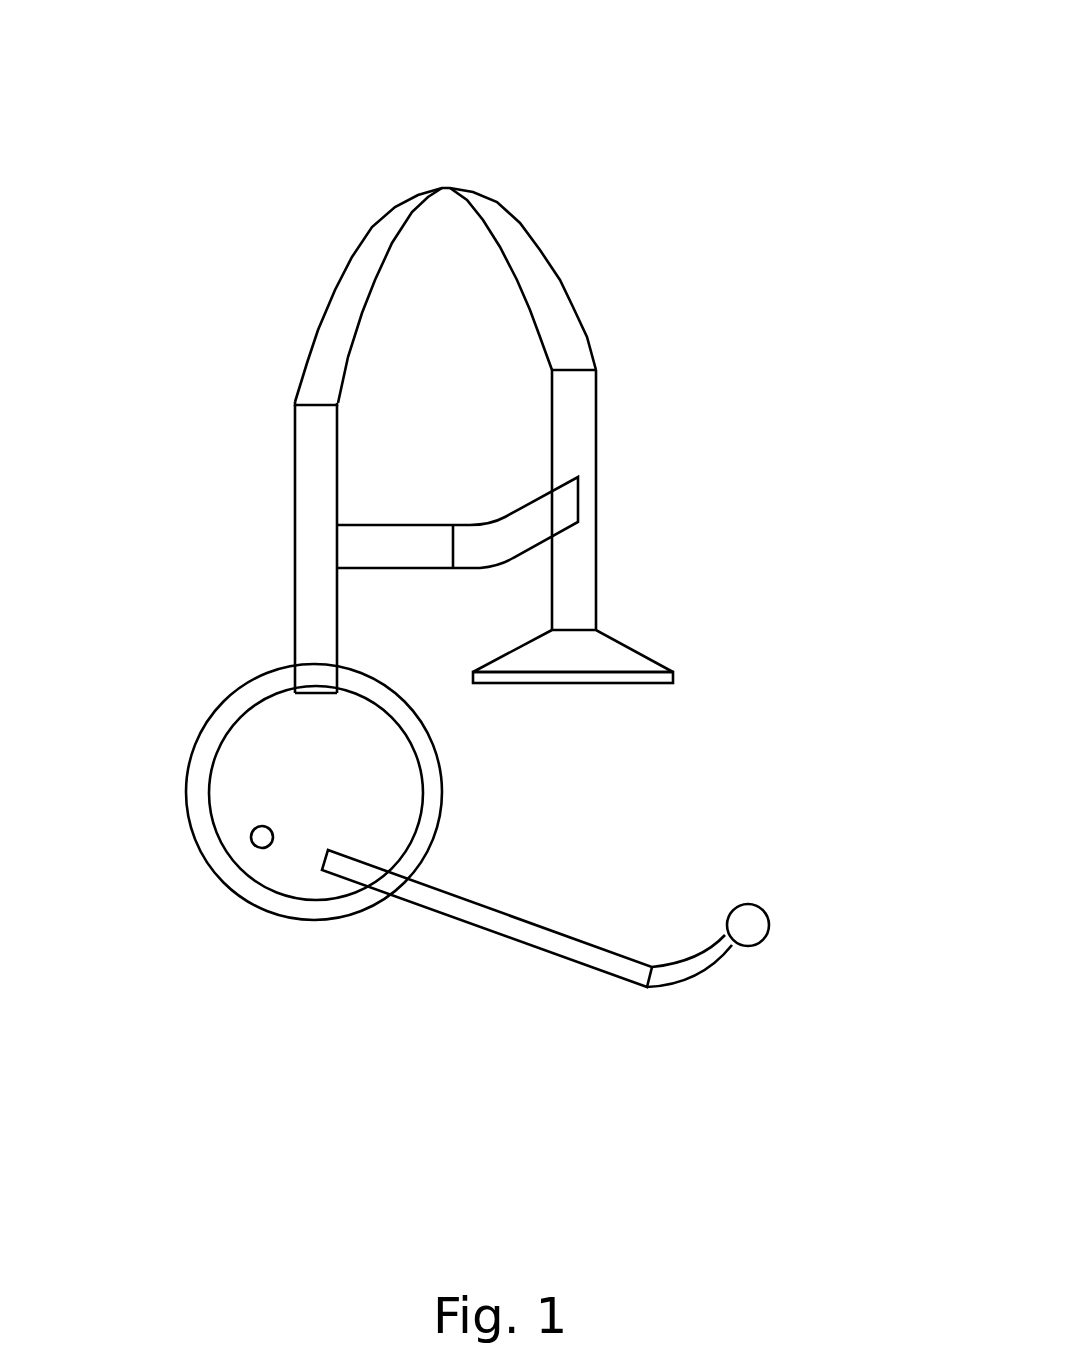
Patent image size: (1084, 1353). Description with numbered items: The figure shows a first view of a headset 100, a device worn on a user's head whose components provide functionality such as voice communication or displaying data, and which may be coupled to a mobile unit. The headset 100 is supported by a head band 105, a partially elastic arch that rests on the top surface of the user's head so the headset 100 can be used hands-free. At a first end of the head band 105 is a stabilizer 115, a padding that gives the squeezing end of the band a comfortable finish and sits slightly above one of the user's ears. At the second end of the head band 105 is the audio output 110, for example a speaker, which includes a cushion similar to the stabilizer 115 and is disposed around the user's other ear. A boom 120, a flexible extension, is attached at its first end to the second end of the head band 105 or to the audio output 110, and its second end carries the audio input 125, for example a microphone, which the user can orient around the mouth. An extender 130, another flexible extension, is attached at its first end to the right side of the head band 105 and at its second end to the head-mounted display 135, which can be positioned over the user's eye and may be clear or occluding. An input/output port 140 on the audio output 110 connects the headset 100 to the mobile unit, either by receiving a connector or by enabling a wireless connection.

The headset 100 is at (883, 72).
The head band 105 is at (547, 290).
The audio output 110 is at (263, 741).
The stabilizer 115 is at (574, 655).
The boom 120 is at (488, 918).
The audio input 125 is at (769, 925).
The extender 130 is at (395, 547).
The head-mounted display 135 is at (542, 524).
The input/output (I/O) port 140 is at (251, 837).